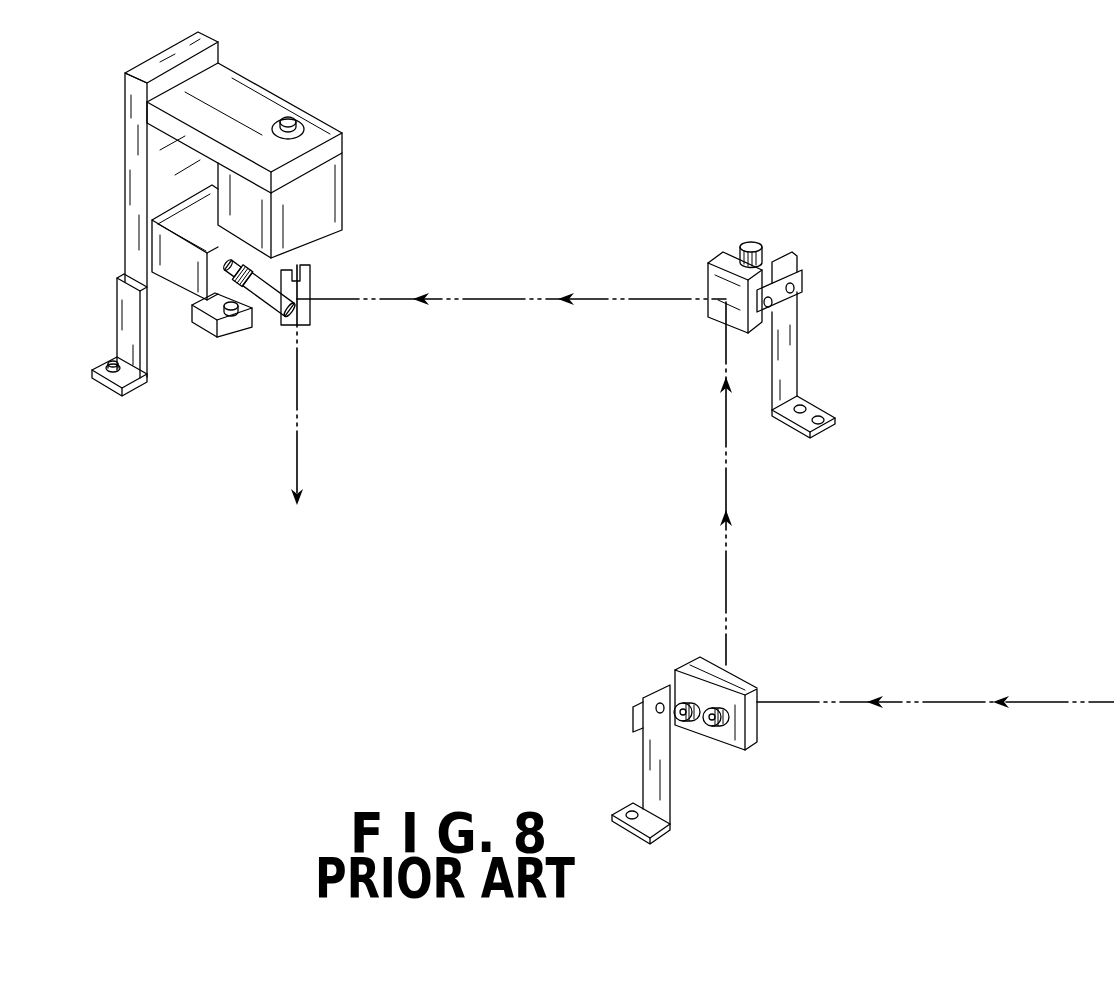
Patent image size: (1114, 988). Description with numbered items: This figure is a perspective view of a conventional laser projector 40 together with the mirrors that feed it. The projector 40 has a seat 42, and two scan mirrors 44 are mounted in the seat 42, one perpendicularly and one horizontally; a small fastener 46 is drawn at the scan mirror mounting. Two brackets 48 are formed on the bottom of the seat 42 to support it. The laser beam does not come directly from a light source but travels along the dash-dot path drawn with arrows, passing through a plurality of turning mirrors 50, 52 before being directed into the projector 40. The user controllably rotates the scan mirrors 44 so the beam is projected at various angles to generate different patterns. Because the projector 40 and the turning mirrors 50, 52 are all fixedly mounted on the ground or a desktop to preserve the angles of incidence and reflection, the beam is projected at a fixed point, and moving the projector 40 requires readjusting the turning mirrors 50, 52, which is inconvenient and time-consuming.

The laser projector 40 is at (348, 102).
The seat 42 is at (132, 138).
The scan mirror 44 is at (305, 316).
The adjusting bolt 46 is at (264, 300).
The bracket 48 is at (126, 326).
The turning mirror 50 is at (718, 283).
The turning mirror 52 is at (758, 719).